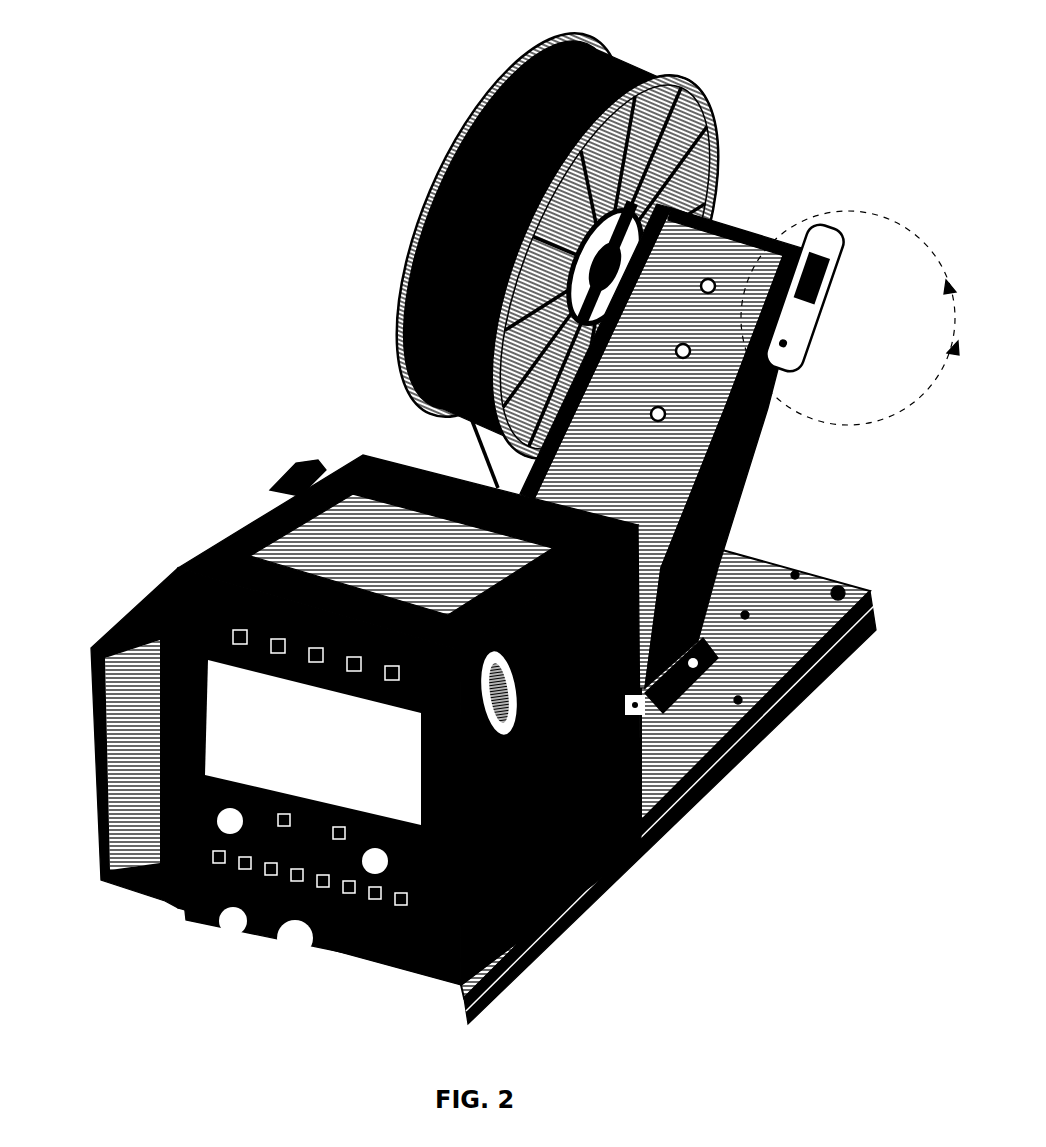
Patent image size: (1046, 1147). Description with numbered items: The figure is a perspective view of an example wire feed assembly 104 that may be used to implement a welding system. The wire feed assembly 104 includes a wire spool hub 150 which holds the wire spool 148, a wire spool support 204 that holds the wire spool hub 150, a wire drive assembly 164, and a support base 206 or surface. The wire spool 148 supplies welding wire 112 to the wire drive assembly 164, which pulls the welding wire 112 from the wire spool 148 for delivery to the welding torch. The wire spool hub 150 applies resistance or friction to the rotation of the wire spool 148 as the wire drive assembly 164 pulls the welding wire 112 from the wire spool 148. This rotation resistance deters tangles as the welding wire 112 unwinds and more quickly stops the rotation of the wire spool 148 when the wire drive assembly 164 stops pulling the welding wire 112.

The wire feed assembly 104 is at (145, 28).
The welding wire 112 is at (450, 163).
The wire spool 148 is at (488, 70).
The wire spool hub 150 is at (764, 176).
The wire drive assembly 164 is at (103, 582).
The wire spool support 204 is at (750, 455).
The support base 206 is at (853, 582).